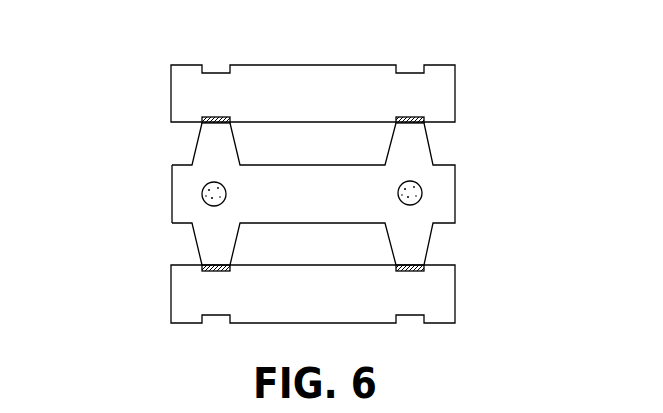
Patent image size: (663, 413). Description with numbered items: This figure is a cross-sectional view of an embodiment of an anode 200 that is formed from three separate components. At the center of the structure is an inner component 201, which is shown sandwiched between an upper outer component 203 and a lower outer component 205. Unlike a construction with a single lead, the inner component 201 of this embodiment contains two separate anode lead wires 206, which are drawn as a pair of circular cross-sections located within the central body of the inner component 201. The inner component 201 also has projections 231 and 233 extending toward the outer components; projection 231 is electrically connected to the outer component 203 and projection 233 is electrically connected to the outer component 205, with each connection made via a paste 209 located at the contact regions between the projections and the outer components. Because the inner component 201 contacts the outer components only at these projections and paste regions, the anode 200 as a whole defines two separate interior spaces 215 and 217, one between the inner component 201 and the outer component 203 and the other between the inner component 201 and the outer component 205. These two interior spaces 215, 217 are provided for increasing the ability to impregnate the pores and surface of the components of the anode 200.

The anode 200 is at (110, 140).
The inner component 201 is at (450, 192).
The outer component 203 is at (445, 97).
The outer component 205 is at (452, 295).
The anode lead wires 206 is at (398, 190).
The paste 209 is at (212, 117).
The interior space 215 is at (323, 155).
The interior space 217 is at (323, 255).
The projection 231 is at (187, 141).
The projection 233 is at (195, 245).